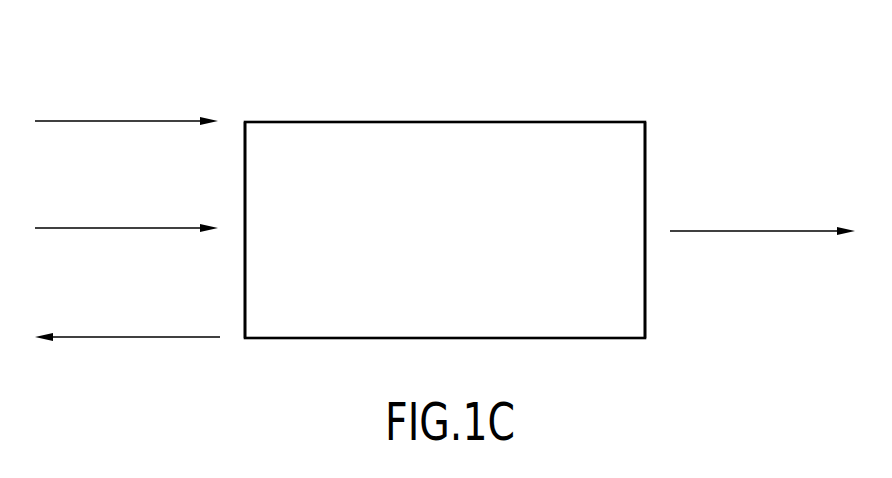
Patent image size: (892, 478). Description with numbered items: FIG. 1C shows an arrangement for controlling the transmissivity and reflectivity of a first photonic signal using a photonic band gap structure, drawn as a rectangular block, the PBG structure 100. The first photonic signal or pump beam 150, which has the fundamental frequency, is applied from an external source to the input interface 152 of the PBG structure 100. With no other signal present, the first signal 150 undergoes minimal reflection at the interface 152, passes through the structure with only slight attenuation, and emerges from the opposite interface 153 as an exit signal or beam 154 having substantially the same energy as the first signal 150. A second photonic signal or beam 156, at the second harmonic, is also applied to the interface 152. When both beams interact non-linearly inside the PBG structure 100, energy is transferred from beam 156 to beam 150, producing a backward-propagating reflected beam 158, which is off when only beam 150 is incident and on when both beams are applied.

The PBG structure 100 is at (433, 121).
The first photonic signal 150 is at (88, 228).
The interface 152 is at (246, 290).
The interface 153 is at (646, 320).
The exit signal 154 is at (750, 231).
The second photonic signal 156 is at (92, 121).
The reflected beam 158 is at (89, 337).